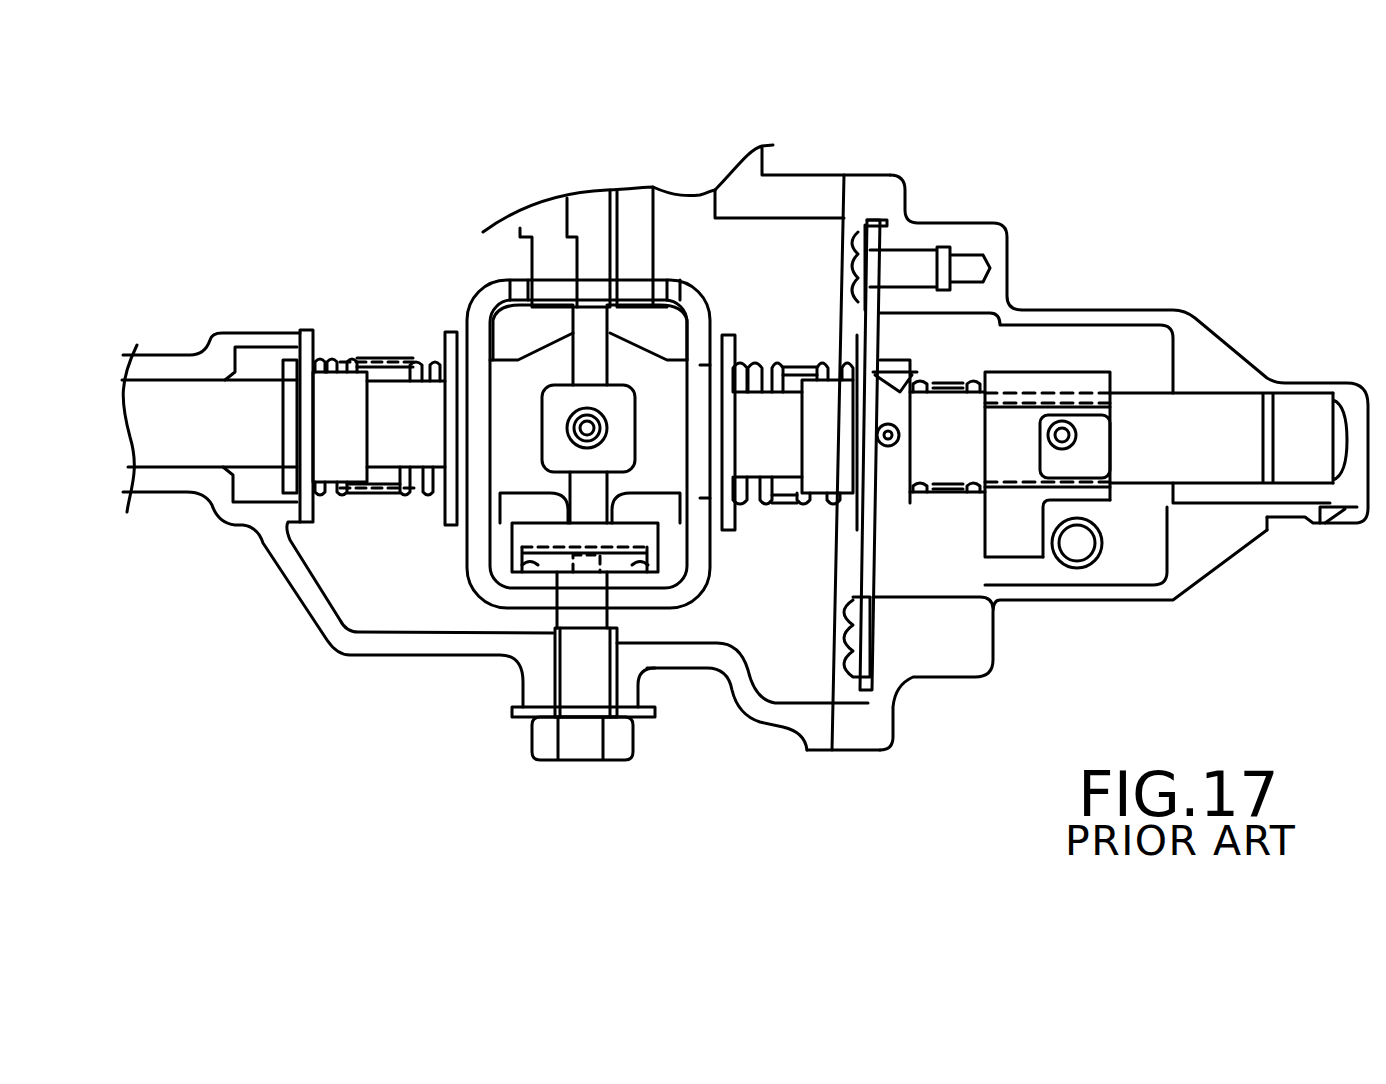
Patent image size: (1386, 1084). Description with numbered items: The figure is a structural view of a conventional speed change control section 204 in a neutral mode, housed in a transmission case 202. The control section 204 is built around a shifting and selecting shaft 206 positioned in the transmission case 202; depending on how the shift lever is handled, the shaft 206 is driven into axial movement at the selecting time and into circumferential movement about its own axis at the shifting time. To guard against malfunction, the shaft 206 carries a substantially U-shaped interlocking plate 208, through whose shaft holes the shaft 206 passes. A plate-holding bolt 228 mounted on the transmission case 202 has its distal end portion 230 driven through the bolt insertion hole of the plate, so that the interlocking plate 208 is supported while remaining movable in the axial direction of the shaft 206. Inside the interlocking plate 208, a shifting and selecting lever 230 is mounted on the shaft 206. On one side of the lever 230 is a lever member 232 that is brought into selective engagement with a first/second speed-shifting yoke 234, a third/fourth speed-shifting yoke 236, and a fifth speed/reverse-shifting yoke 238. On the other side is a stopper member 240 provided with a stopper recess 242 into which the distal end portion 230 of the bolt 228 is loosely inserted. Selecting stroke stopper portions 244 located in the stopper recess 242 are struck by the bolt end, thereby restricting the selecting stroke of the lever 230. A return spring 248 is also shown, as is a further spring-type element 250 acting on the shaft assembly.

The transmission case 202 is at (997, 290).
The speed change control section 204 is at (727, 120).
The shifting and selecting shaft 206 is at (1132, 470).
The interlocking plate 208 is at (707, 277).
The plate-holding bolt 228 is at (584, 755).
The shifting and selecting lever 230 is at (520, 343).
The lever member 232 is at (580, 323).
The first/second speed-shifting yoke 234 is at (547, 230).
The third/fourth speed-shifting yoke 236 is at (593, 207).
The fifth speed/reverse-shifting yoke 238 is at (633, 207).
The stopper member 240 is at (520, 540).
The stopper recess 242 is at (550, 560).
The selecting stroke stopper portions 244 is at (522, 562).
The return spring 248 is at (803, 520).
The spring 250 is at (403, 500).